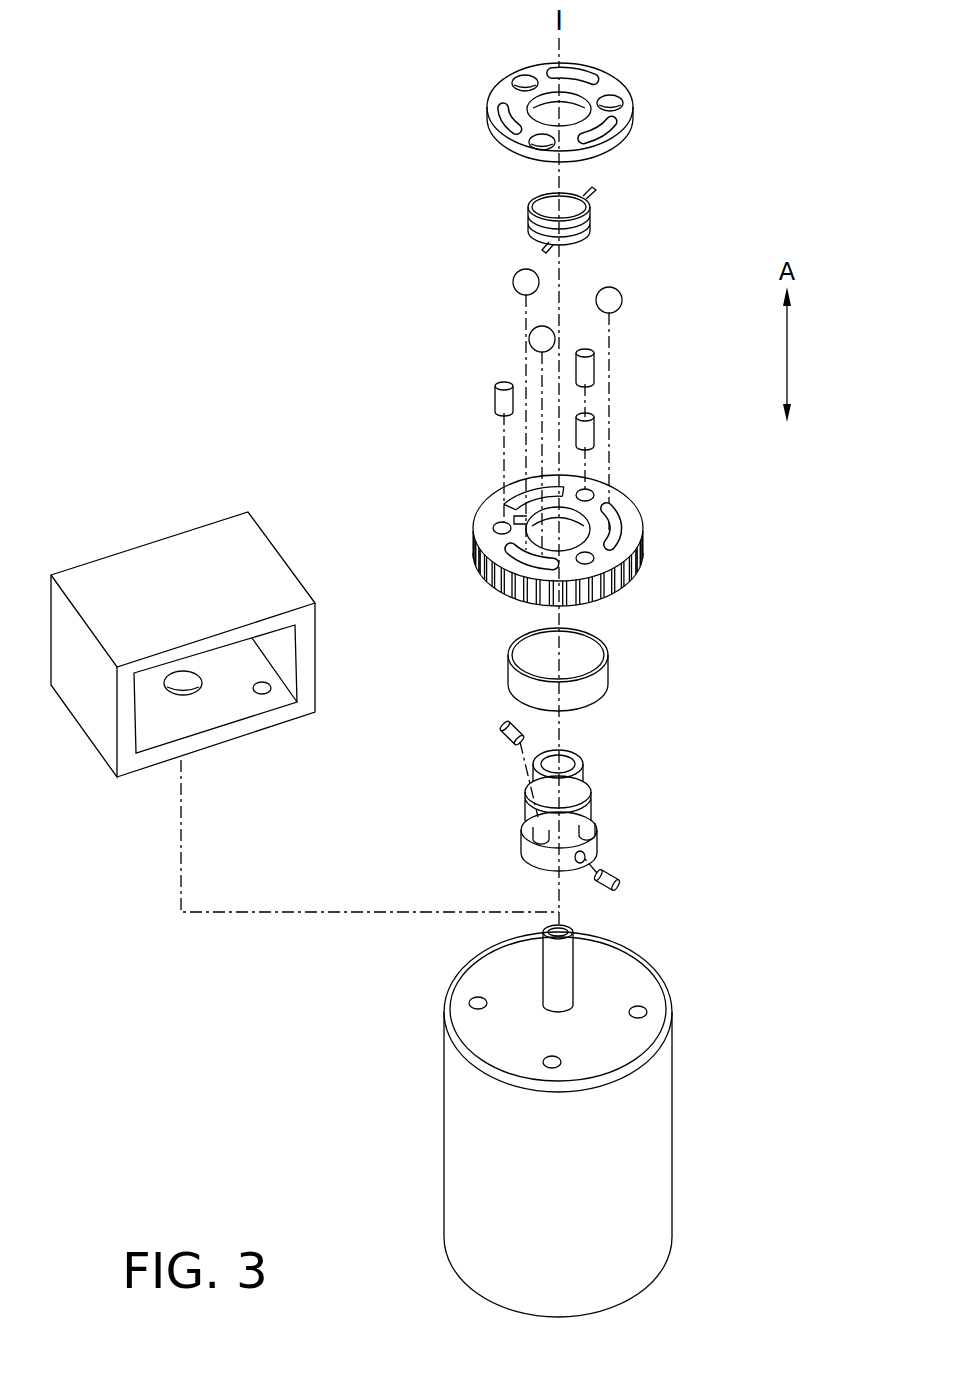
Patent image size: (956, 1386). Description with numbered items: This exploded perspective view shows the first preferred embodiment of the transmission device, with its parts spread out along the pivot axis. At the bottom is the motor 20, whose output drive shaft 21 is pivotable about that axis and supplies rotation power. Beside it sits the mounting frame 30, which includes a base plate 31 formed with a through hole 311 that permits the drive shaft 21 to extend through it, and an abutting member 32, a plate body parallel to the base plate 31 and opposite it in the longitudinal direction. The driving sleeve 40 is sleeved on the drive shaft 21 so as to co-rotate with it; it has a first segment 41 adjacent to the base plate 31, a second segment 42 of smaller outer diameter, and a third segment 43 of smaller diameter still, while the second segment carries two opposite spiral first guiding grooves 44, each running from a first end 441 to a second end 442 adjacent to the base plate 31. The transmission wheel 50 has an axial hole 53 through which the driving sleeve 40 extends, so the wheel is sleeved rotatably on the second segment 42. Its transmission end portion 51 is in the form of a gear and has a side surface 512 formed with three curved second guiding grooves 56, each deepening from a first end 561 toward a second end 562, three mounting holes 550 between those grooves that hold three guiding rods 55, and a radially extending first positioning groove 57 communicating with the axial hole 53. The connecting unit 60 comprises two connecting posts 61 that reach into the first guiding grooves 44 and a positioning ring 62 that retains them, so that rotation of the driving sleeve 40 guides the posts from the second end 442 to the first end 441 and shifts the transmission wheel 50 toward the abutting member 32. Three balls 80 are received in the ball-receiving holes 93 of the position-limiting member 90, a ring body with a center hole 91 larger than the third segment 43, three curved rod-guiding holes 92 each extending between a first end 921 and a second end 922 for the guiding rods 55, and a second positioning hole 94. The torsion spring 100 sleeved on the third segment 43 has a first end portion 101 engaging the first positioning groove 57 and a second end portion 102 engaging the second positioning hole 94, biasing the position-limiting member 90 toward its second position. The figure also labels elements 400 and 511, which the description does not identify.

The motor 20 is at (435, 1160).
The drive shaft 21 is at (566, 980).
The mounting frame 30 is at (95, 542).
The base plate 31 is at (151, 762).
The through hole 311 is at (182, 694).
The abutting member 32 is at (191, 547).
The driving sleeve 40 is at (512, 851).
The first segment 41 is at (546, 863).
The axial bore 400 is at (591, 802).
The second segment 42 is at (527, 805).
The third segment 43 is at (584, 780).
The first guiding grooves 44 is at (536, 829).
The first end 441 is at (567, 862).
The second end 442 is at (588, 850).
The transmission wheel 50 is at (360, 489).
The transmission end portion 51 is at (481, 582).
The gear teeth 511 is at (513, 603).
The side surface 512 is at (487, 521).
The axial hole 53 is at (600, 517).
The guiding rods 55 is at (495, 398).
The mounting holes 550 is at (594, 495).
The second guiding grooves 56 is at (527, 490).
The first end 561 is at (562, 492).
The second end 562 is at (512, 505).
The first positioning groove 57 is at (516, 518).
The connecting unit 60 is at (492, 738).
The connecting posts 61 is at (504, 726).
The positioning ring 62 is at (604, 680).
The balls 80 is at (529, 339).
The position-limiting member 90 is at (475, 98).
The center hole 91 is at (573, 110).
The rod-guiding holes 92 is at (507, 123).
The first end 921 is at (592, 157).
The second end 922 is at (617, 124).
The ball-receiving holes 93 is at (527, 87).
The second positioning hole 94 is at (513, 83).
The torsion spring 100 is at (527, 213).
The first end portion 101 is at (541, 249).
The second end portion 102 is at (592, 192).